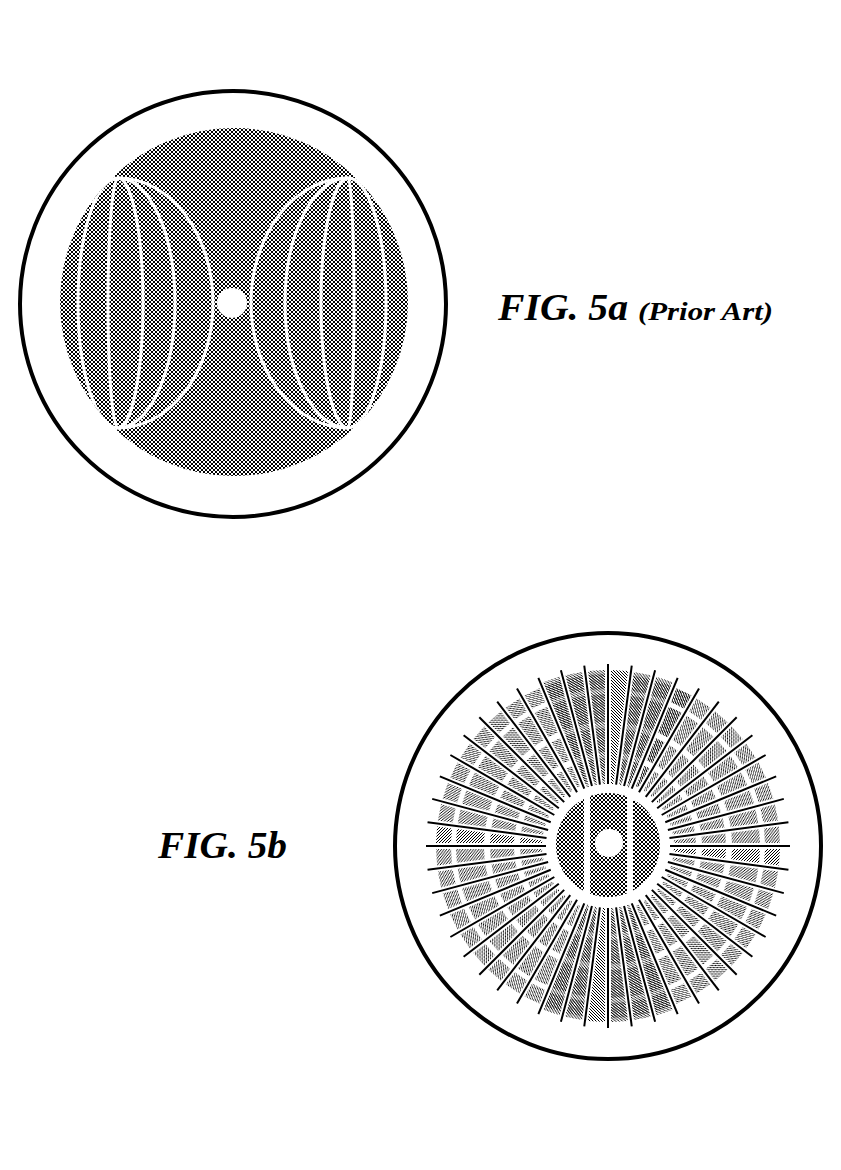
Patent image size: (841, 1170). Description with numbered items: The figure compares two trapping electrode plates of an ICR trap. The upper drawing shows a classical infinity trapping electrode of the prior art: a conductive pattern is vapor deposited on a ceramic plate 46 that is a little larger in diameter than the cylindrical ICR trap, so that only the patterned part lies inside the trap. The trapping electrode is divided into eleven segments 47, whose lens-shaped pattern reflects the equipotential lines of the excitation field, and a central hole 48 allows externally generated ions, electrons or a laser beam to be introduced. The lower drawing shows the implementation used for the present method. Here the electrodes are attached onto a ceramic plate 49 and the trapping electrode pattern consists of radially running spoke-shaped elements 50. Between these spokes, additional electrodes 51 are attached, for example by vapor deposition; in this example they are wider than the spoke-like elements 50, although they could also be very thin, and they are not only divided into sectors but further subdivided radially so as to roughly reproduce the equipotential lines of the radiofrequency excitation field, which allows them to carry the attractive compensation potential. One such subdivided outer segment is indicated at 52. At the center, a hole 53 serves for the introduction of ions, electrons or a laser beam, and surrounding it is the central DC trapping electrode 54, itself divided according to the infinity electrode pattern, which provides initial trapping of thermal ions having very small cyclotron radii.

In FIG. 5A, the ceramic plate 46 is at (152, 105).
In FIG. 5A, the segments 47 is at (290, 200).
In FIG. 5A, the hole 48 is at (232, 306).
In FIG. 5B, the ceramic plate 49 is at (735, 665).
In FIG. 5B, the spoke-shaped elements 50 is at (517, 680).
In FIG. 5B, the additional electrodes 51 is at (597, 680).
In FIG. 5B, the outer segment 52 is at (675, 982).
In FIG. 5B, the hole 53 is at (607, 855).
In FIG. 5B, the central DC trapping electrode 54 is at (615, 887).